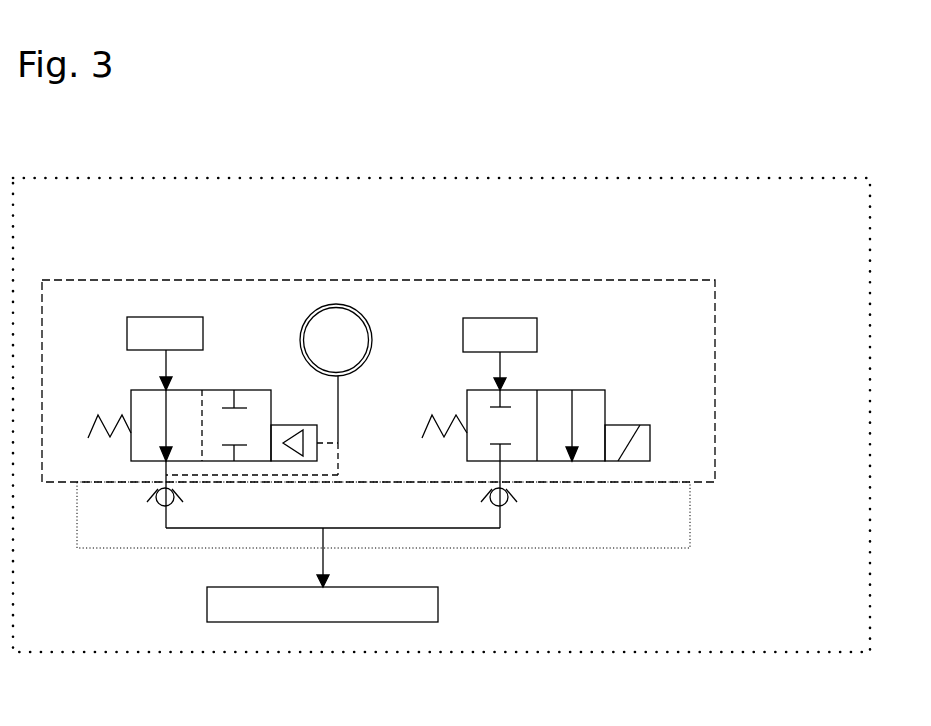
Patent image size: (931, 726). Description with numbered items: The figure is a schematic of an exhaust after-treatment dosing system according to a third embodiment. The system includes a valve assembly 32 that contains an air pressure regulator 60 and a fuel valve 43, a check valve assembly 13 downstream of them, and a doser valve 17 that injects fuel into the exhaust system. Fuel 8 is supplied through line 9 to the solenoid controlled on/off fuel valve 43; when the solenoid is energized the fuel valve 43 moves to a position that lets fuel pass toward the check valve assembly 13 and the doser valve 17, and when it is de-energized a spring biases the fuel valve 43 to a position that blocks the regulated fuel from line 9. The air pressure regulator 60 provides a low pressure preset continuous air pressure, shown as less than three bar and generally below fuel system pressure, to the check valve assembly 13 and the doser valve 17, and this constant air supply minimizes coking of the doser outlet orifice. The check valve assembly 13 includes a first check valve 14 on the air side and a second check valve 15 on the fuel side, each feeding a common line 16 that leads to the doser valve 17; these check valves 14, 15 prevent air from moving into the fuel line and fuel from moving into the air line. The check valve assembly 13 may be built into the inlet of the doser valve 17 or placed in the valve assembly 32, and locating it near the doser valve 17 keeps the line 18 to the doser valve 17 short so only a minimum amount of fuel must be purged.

The fuel 8 is at (538, 328).
The line 9 is at (502, 370).
The check valve assembly 13 is at (157, 548).
The first check valve 14 is at (162, 505).
The second check valve 15 is at (507, 503).
The line 16 is at (327, 527).
The doser valve 17 is at (203, 612).
The line 18 is at (325, 553).
The valve assembly 32 is at (717, 413).
The fuel valve 43 is at (607, 400).
The pressure regulator 60 is at (126, 372).